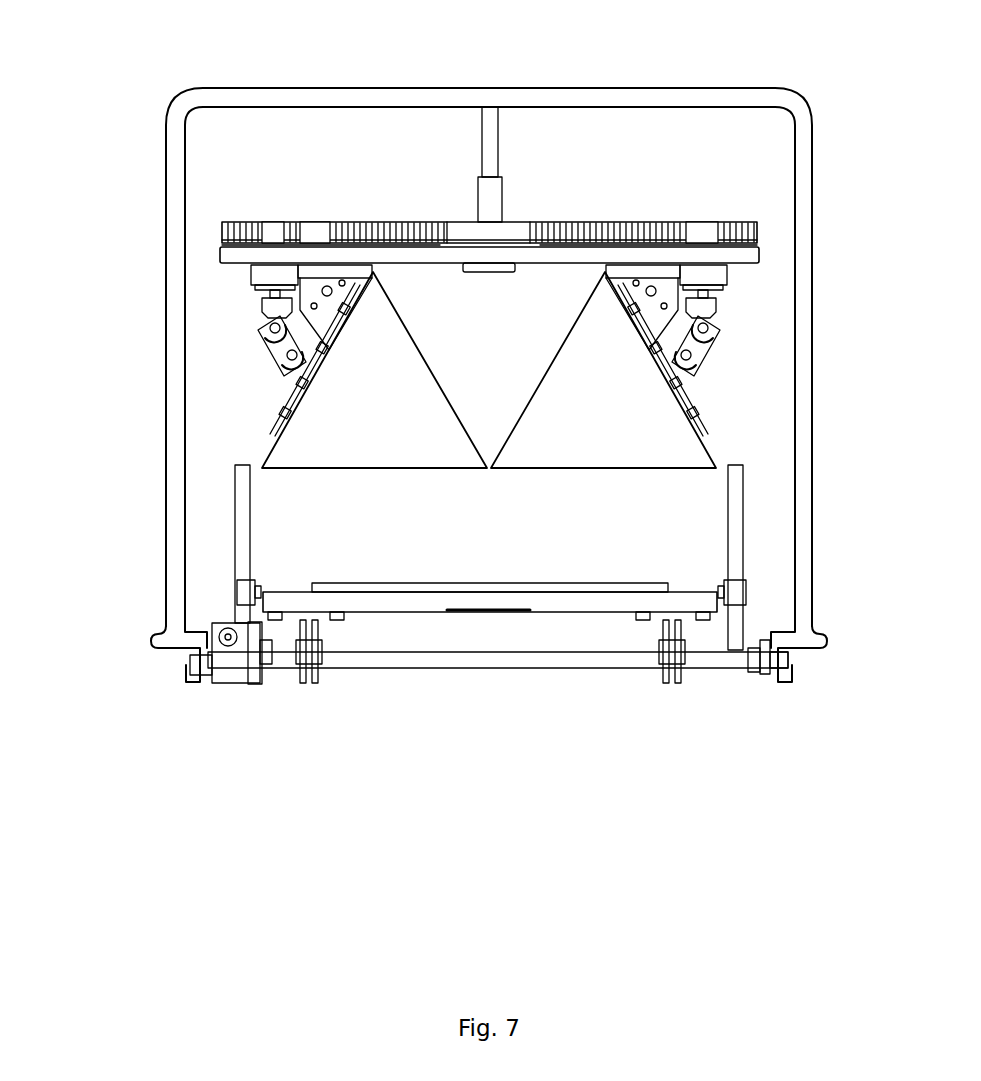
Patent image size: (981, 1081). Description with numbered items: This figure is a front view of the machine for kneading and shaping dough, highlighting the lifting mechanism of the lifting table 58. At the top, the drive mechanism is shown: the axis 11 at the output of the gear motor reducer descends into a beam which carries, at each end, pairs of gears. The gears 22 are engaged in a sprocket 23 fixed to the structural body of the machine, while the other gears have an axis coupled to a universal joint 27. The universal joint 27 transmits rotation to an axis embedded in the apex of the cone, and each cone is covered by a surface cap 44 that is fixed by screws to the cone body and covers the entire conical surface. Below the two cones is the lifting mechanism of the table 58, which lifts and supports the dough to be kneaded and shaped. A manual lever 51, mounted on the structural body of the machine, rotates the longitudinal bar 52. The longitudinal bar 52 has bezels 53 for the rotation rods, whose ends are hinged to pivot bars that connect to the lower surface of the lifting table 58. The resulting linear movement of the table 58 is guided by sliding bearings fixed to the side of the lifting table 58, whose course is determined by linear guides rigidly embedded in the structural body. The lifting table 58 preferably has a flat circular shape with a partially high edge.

The axis 11 is at (490, 142).
The gears 22 is at (315, 233).
The sprocket 23 is at (562, 233).
The universal joint 27 is at (718, 314).
The surface cap 44 is at (322, 443).
The manual lever 51 is at (805, 368).
The longitudinal bar 52 is at (502, 660).
The bezels 53 is at (672, 683).
The lifting table 58 is at (393, 603).